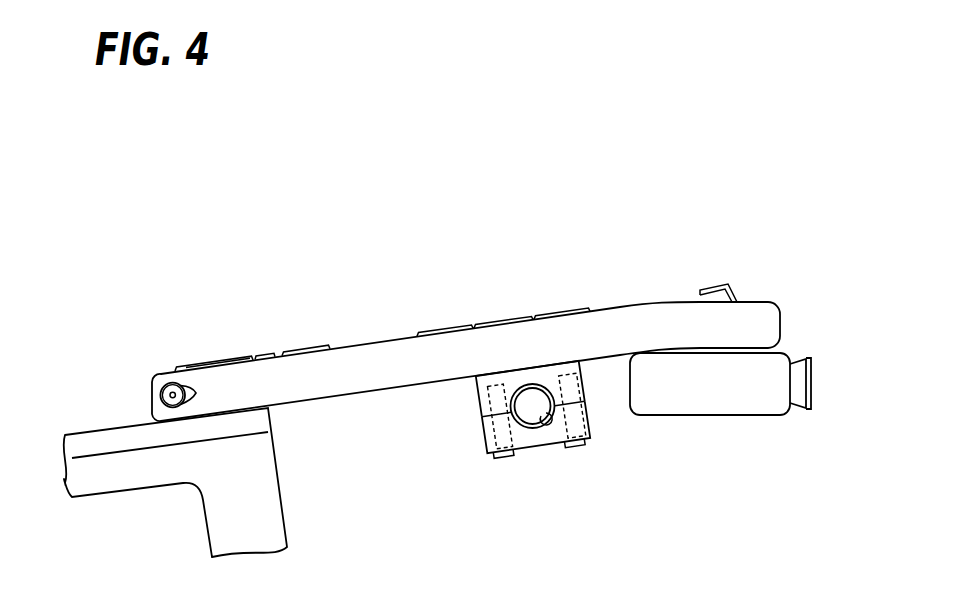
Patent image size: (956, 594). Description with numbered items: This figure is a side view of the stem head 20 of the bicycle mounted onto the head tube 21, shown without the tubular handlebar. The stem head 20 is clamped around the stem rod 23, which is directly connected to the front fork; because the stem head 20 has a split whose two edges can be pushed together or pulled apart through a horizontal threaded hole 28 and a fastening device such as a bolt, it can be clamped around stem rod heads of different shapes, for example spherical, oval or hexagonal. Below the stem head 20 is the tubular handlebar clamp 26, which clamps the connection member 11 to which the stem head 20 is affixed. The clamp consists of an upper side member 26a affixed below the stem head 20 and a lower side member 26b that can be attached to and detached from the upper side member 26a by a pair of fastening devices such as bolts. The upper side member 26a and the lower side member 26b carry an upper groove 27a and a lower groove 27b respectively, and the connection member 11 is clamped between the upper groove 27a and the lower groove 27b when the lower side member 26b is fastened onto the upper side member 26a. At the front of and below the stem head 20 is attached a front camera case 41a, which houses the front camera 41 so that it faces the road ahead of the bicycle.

The connection member 11 is at (547, 424).
The stem head 20 is at (382, 342).
The head tube 21 is at (273, 517).
The stem rod 23 is at (223, 359).
The tubular handlebar clamp 26 is at (408, 397).
The upper side member 26a is at (480, 402).
The lower side member 26b is at (486, 438).
The upper groove 27a is at (535, 384).
The lower groove 27b is at (532, 430).
The horizontal threaded hole 28 is at (160, 396).
The front camera 41 is at (804, 344).
The front camera case 41a is at (768, 417).